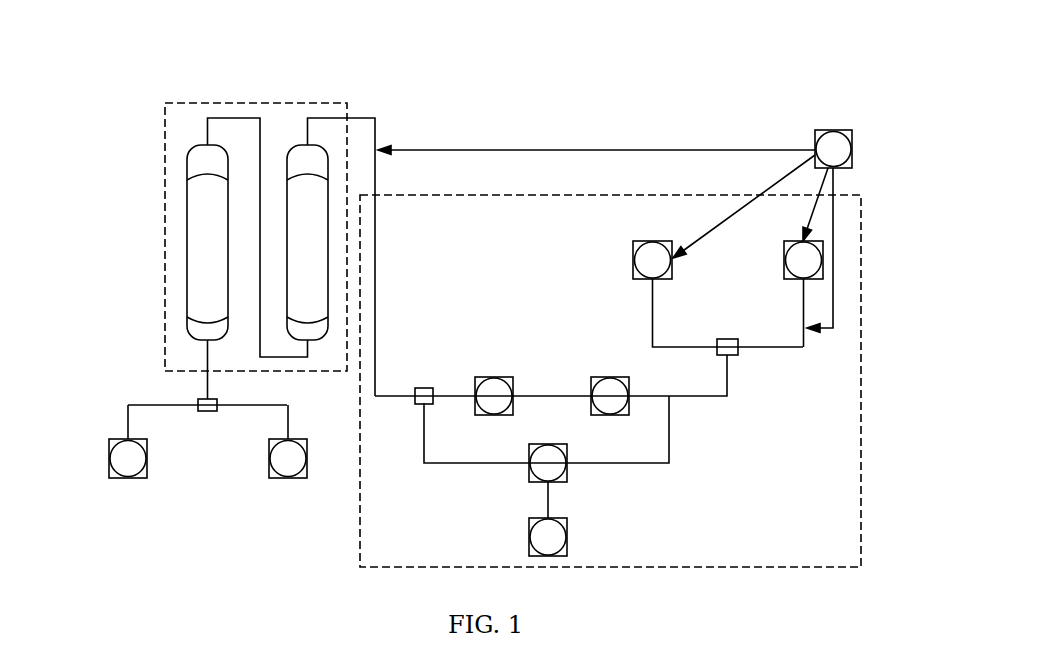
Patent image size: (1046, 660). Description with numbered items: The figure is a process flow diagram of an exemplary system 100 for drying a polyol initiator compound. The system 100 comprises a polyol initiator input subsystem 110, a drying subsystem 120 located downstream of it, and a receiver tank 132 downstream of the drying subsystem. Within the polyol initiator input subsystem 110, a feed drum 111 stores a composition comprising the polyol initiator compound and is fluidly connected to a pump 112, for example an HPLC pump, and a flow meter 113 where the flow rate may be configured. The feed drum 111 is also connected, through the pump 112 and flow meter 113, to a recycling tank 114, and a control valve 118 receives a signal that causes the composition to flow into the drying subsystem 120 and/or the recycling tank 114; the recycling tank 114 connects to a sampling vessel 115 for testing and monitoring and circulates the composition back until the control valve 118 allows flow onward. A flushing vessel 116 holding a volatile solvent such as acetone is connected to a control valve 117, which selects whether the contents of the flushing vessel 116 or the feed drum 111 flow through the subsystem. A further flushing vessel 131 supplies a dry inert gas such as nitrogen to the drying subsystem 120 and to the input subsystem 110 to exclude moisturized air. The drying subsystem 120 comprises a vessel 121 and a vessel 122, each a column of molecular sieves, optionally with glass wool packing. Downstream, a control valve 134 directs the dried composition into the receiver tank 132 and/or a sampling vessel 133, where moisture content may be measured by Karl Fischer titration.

The system 100 is at (112, 88).
The polyol initiator input subsystem 110 is at (890, 375).
The feed drum 111 is at (785, 260).
The pump 112 is at (610, 376).
The flow meter 113 is at (494, 376).
The recycling tank 114 is at (515, 492).
The sampling vessel 115 is at (567, 537).
The flushing vessel 116 is at (633, 260).
The control valve 117 is at (759, 378).
The control valve 118 is at (421, 379).
The drying subsystem 120 is at (250, 82).
The vessel 121 is at (178, 221).
The vessel 122 is at (344, 247).
The flushing vessel 131 is at (833, 130).
The receiver tank 132 is at (109, 458).
The sampling vessel 133 is at (269, 458).
The control valve 134 is at (187, 394).